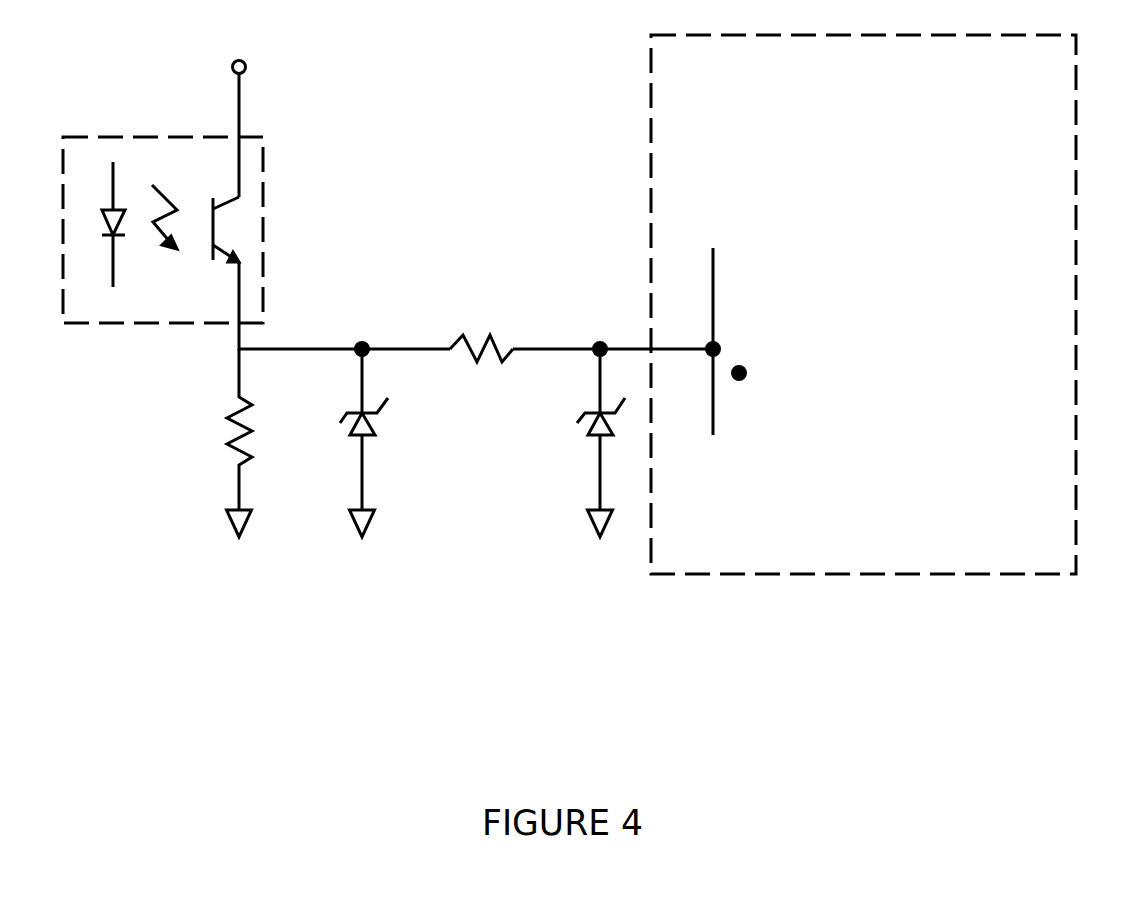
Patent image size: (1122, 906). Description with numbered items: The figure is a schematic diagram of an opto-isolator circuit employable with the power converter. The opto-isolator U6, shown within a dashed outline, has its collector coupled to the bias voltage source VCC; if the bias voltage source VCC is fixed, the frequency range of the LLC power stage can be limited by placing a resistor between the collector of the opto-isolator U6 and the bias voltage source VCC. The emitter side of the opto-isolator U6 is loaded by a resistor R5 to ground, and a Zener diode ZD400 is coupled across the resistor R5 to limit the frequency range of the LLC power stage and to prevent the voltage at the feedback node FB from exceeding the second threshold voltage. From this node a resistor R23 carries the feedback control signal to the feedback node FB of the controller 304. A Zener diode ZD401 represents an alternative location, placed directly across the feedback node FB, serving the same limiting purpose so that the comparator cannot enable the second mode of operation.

The bias voltage source VCC is at (241, 110).
The opto-isolator U6 is at (188, 299).
The resistor R5 is at (215, 443).
The resistor R23 is at (481, 330).
The Zener diode ZD400 is at (405, 443).
The Zener diode ZD401 is at (564, 443).
The feedback node FB is at (745, 341).
The controller 304 is at (1058, 552).